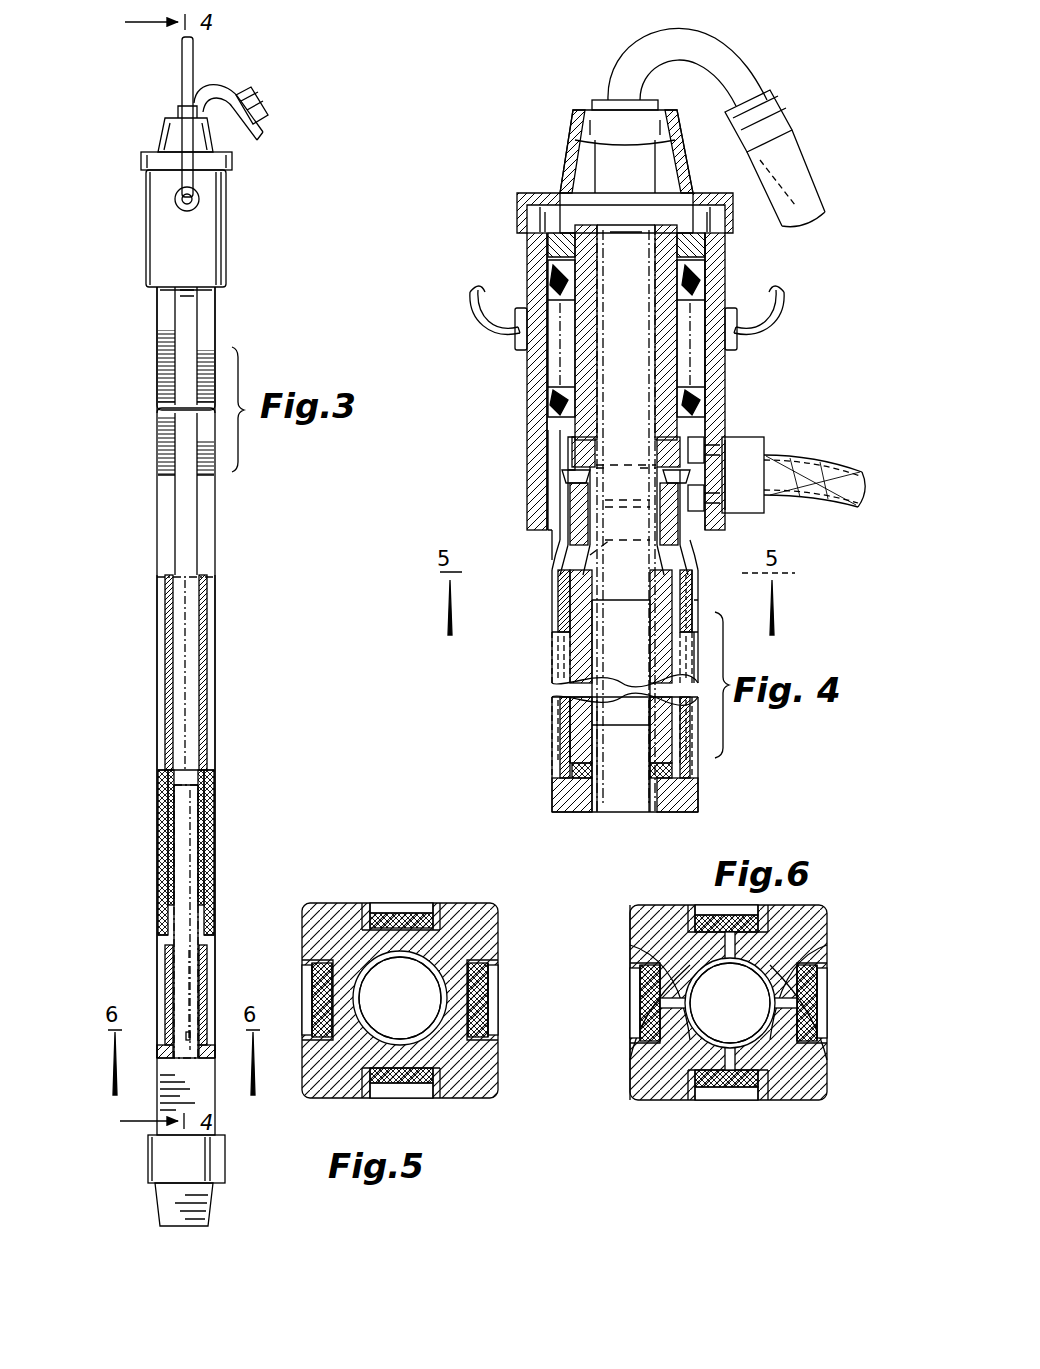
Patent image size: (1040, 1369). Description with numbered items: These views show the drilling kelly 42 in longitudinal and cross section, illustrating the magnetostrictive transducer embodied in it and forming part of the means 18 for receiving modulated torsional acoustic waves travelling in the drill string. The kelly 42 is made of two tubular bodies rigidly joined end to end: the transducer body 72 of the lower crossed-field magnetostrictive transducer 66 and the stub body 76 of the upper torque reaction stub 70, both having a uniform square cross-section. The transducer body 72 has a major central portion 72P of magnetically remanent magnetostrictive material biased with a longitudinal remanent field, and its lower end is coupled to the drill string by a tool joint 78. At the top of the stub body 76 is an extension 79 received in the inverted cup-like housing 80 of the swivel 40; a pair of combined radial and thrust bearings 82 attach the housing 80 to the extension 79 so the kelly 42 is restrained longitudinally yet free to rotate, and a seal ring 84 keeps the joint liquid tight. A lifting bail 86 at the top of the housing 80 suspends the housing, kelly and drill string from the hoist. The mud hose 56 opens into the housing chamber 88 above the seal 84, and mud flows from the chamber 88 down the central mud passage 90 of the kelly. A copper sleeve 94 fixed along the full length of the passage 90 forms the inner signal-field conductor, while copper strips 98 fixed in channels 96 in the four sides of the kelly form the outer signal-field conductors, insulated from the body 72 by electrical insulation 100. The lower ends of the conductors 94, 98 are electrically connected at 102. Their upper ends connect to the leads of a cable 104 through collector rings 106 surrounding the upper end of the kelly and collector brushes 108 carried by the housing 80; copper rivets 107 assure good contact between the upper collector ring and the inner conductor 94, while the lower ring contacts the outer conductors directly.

In FIG. 3, the means for receiving modulated torsional acoustic waves 18 is at (128, 712).
In FIG. 4, the swivel 40 is at (520, 355).
In FIG. 3, the drilling kelly 42 is at (222, 685).
In FIG. 4, the drilling kelly 42 is at (578, 814).
In FIG. 3, the mud hose 56 is at (263, 133).
In FIG. 4, the mud hose 56 is at (810, 172).
In FIG. 3, the crossed-field magnetostrictive transducer 66 is at (222, 810).
In FIG. 4, the crossed-field magnetostrictive transducer 66 is at (548, 713).
In FIG. 6, the crossed-field magnetostrictive transducer 66 is at (628, 962).
In FIG. 3, the torque reaction stub 70 is at (222, 318).
In FIG. 4, the torque reaction stub 70 is at (556, 622).
In FIG. 3, the transducer body 72 is at (215, 616).
In FIG. 4, the transducer body 72 is at (570, 792).
In FIG. 6, the transducer body 72 is at (630, 936).
In FIG. 3, the major central portion of transducer body 72P is at (216, 728).
In FIG. 3, the torque reaction stub body 76 is at (212, 310).
In FIG. 4, the torque reaction stub body 76 is at (553, 584).
In FIG. 5, the torque reaction stub body 76 is at (470, 903).
In FIG. 3, the tool joint 78 is at (150, 1200).
In FIG. 4, the extension 79 is at (584, 325).
In FIG. 3, the swivel housing 80 is at (222, 225).
In FIG. 4, the swivel housing 80 is at (738, 340).
In FIG. 4, the combined radial and thrust bearings 82 is at (545, 278).
In FIG. 4, the seal ring 84 is at (730, 245).
In FIG. 3, the lifting bail 86 is at (194, 60).
In FIG. 4, the lifting bail 86 is at (788, 296).
In FIG. 4, the housing chamber 88 is at (595, 170).
In FIG. 4, the mud passage 90 is at (615, 812).
In FIG. 5, the mud passage 90 is at (414, 1010).
In FIG. 6, the mud passage 90 is at (744, 1030).
In FIG. 3, the sleeve 94 is at (178, 965).
In FIG. 4, the sleeve 94 is at (612, 655).
In FIG. 5, the sleeve 94 is at (435, 962).
In FIG. 6, the sleeve 94 is at (690, 1012).
In FIG. 4, the channels 96 is at (698, 592).
In FIG. 5, the channels 96 is at (368, 920).
In FIG. 6, the channels 96 is at (758, 905).
In FIG. 4, the strips 98 is at (696, 558).
In FIG. 5, the strips 98 is at (385, 905).
In FIG. 6, the strips 98 is at (705, 908).
In FIG. 4, the electrical insulation 100 is at (698, 575).
In FIG. 6, the electrical insulation 100 is at (760, 930).
In FIG. 4, the electrical connection 102 is at (670, 770).
In FIG. 6, the electrical connection 102 is at (660, 935).
In FIG. 4, the cable 104 is at (815, 470).
In FIG. 4, the collector rings 106 is at (560, 490).
In FIG. 4, the copper rivets 107 is at (585, 450).
In FIG. 4, the collector brushes 108 is at (700, 447).